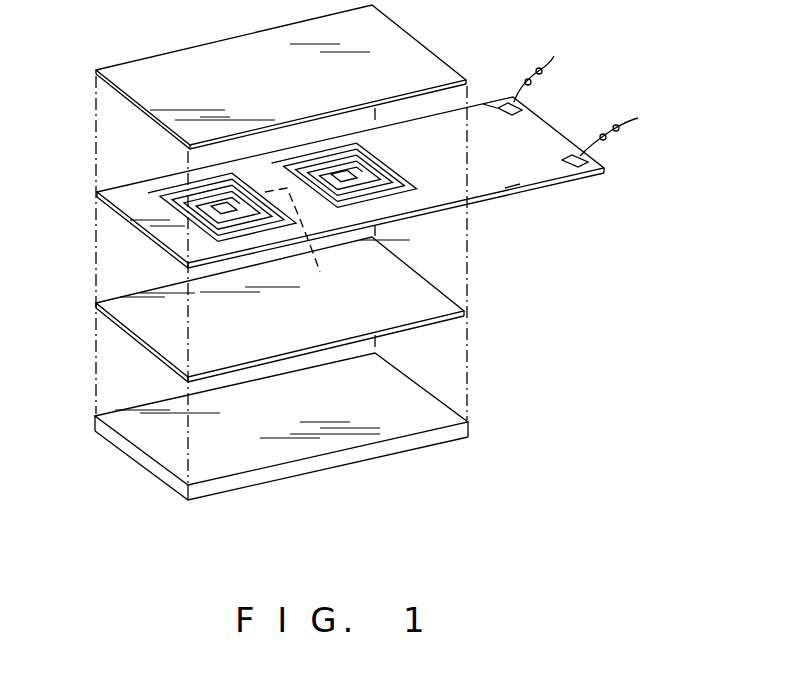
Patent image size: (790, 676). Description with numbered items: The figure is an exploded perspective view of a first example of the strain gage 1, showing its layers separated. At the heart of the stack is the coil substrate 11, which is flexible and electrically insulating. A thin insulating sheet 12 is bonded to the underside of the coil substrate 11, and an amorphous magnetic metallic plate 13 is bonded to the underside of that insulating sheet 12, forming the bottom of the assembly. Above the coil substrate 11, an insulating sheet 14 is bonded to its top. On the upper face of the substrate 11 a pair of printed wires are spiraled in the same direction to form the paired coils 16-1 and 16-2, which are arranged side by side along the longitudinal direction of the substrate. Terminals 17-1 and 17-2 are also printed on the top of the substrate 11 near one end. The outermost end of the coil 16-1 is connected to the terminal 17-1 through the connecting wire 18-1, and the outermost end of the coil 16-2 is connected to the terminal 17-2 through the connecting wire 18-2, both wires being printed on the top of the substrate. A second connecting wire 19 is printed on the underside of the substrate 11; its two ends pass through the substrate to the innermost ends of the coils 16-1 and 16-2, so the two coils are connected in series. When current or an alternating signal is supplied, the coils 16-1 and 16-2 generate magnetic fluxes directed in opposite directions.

The strain gage 1 is at (567, 354).
The coil substrate 11 is at (120, 192).
The thin insulating sheet 12 is at (118, 303).
The amorphous magnetic metallic plate 13 is at (115, 416).
The insulating sheet 14 is at (118, 70).
The coil 16-1 is at (172, 187).
The coil 16-2 is at (374, 164).
The terminal 17-1 is at (582, 170).
The terminal 17-2 is at (508, 101).
The connecting wire 18-1 is at (510, 182).
The connecting wire 18-2 is at (483, 118).
The second connecting wire 19 is at (305, 246).